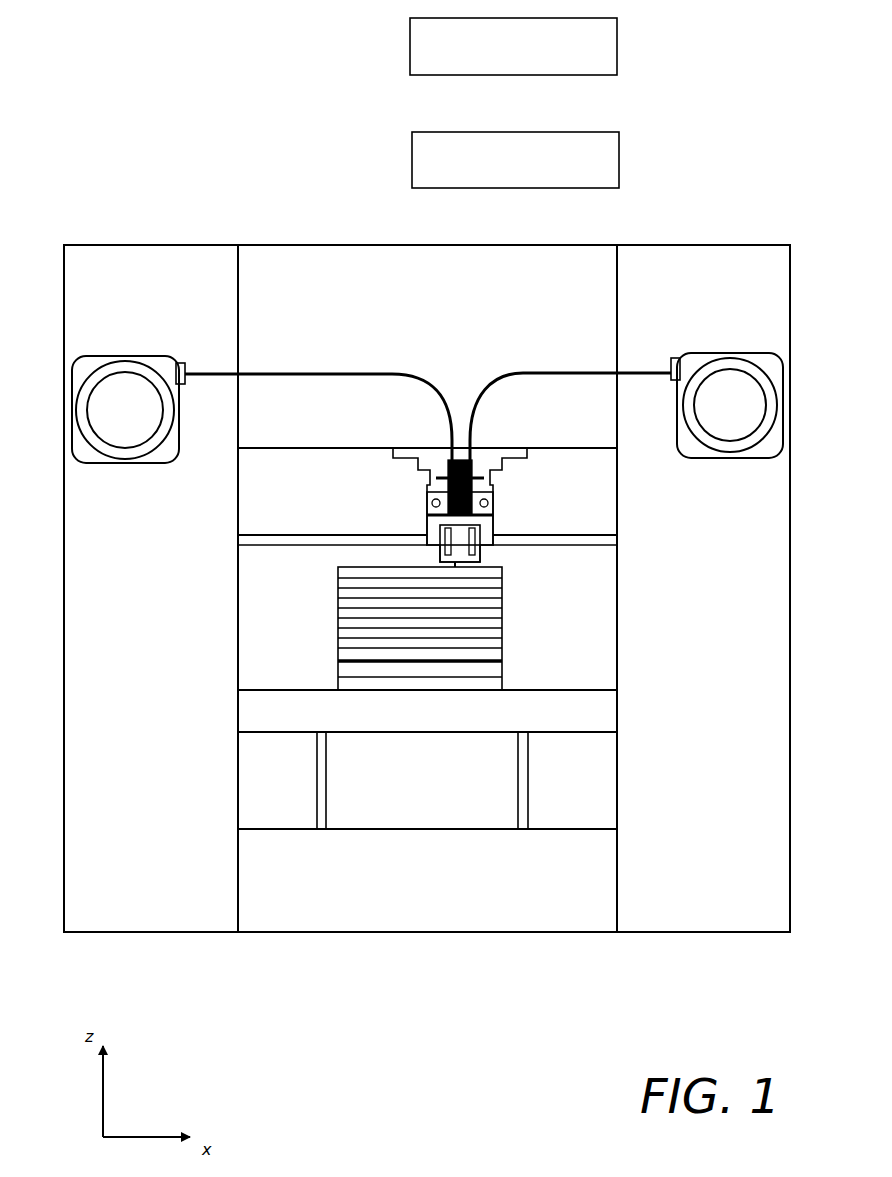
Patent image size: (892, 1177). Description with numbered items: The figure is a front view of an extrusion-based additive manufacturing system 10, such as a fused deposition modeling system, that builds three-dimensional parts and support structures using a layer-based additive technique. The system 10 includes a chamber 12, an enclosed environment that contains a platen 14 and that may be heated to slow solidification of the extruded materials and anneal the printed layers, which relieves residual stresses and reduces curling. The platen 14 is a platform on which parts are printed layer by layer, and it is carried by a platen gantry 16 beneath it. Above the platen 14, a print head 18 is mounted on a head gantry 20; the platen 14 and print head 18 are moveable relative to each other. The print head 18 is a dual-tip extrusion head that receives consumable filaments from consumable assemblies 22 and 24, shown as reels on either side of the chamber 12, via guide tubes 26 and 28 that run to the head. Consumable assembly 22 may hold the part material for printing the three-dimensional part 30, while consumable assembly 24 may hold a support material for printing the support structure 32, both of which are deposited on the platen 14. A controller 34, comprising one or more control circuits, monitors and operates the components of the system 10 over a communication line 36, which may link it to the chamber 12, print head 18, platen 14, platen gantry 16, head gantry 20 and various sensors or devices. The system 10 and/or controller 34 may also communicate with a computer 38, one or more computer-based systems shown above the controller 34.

The system 10 is at (263, 205).
The chamber 12 is at (246, 644).
The platen 14 is at (612, 723).
The platen gantry 16 is at (538, 813).
The print head 18 is at (516, 502).
The head gantry 20 is at (300, 535).
The consumable assembly 22 is at (115, 356).
The consumable assembly 24 is at (700, 353).
The guide tube 26 is at (255, 374).
The guide tube 28 is at (625, 373).
The 3D part 30 is at (499, 623).
The support structure 32 is at (345, 676).
The controller 34 is at (619, 144).
The communication line 36 is at (513, 199).
The computer 38 is at (617, 30).